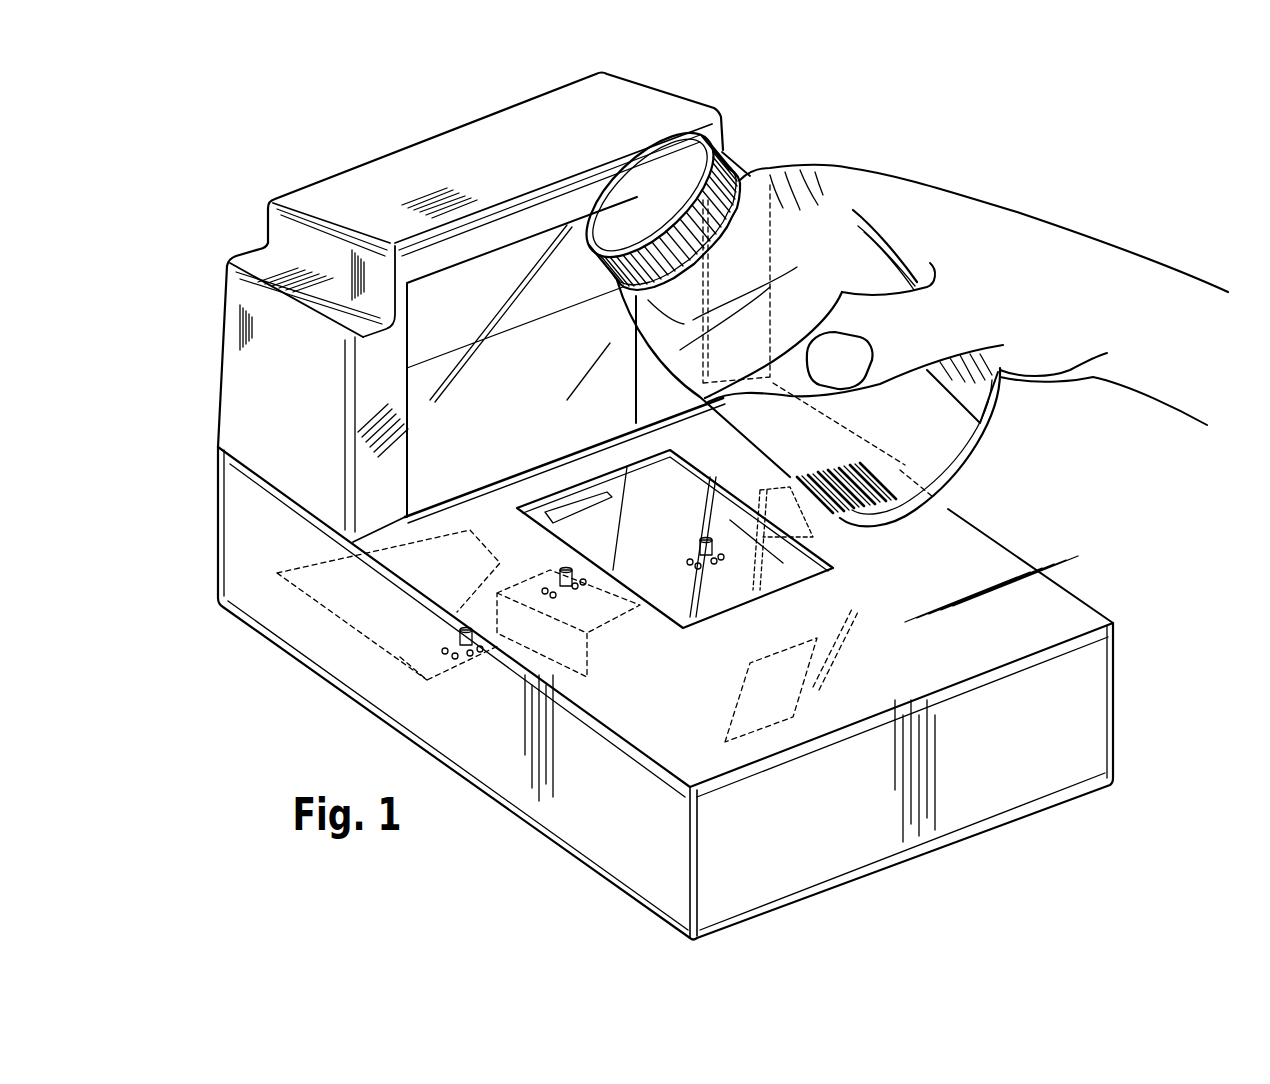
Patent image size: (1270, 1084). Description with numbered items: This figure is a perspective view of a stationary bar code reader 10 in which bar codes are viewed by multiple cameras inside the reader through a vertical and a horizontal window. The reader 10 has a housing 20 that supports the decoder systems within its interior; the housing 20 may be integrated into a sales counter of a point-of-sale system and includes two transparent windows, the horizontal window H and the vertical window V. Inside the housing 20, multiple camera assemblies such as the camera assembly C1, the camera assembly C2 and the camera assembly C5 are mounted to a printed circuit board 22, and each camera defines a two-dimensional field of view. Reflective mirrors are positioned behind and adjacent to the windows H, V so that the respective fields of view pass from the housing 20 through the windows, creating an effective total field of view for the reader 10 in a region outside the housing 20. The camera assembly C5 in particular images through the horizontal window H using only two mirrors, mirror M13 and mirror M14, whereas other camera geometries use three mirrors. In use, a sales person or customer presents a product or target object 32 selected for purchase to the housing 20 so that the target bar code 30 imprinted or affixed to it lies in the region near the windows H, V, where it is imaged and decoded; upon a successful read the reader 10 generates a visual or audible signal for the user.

The reader 10 is at (332, 131).
The housing 20 is at (347, 193).
The printed circuit board 22 is at (383, 623).
The target bar code 30 is at (895, 474).
The target object 32 is at (817, 242).
The vertical window V is at (493, 393).
The horizontal window H is at (668, 603).
The mirror M13 is at (563, 507).
The mirror M14 is at (773, 690).
The camera assembly C1 is at (470, 640).
The camera assembly C2 is at (717, 567).
The camera assembly C5 is at (560, 575).